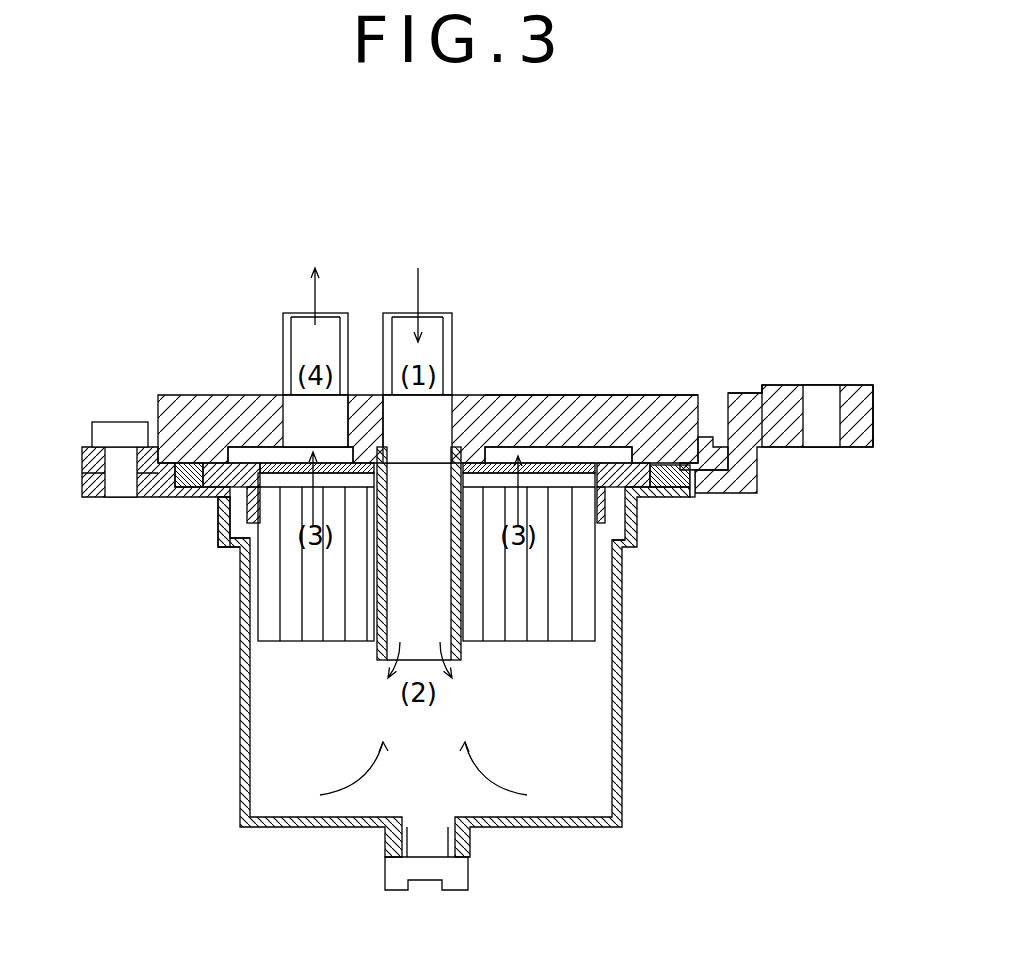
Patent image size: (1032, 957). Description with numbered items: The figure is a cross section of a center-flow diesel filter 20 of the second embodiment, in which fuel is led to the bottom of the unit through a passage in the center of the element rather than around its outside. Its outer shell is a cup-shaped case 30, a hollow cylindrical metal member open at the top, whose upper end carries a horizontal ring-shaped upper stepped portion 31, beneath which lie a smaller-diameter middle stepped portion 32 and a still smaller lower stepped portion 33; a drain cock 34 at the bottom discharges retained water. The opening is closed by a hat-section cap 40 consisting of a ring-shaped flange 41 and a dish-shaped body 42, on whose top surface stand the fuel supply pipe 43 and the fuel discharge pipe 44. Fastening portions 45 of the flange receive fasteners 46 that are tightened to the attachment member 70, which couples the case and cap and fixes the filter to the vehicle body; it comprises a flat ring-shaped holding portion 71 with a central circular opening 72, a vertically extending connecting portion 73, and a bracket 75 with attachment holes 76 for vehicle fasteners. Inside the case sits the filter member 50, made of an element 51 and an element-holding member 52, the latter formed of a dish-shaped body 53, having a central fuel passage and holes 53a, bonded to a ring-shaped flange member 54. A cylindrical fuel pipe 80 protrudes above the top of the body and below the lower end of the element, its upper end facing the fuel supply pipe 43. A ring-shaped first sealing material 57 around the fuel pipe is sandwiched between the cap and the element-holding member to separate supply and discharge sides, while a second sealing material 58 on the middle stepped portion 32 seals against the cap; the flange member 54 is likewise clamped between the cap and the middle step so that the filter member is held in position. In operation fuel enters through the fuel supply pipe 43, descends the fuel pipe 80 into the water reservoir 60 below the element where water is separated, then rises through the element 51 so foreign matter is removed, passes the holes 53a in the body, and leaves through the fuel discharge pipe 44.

The diesel filter 20 is at (815, 378).
The case 30 is at (624, 750).
The upper stepped portion 31 is at (82, 466).
The middle stepped portion 32 is at (197, 497).
The lower stepped portion 33 is at (220, 558).
The drain cock 34 is at (462, 872).
The cap 40 is at (213, 390).
The ring-shaped flange 41 is at (711, 445).
The dish-shaped body 42 is at (599, 396).
The fuel supply pipe 43 is at (446, 312).
The fuel discharge pipe 44 is at (284, 312).
The fastening portion 45 is at (85, 452).
The fastener 46 is at (100, 430).
The filter member 50 is at (600, 586).
The element 51 is at (590, 545).
The element-holding member 52 is at (530, 462).
The body 53 is at (212, 462).
The holes 53a is at (292, 468).
The flange member 54 is at (647, 462).
The first sealing material 57 is at (358, 396).
The second sealing material 58 is at (178, 498).
The water reservoir 60 is at (280, 782).
The attachment member 70 is at (877, 452).
The holding portion 71 is at (85, 492).
The circular opening 72 is at (693, 495).
The connecting portion 73 is at (745, 485).
The bracket 75 is at (781, 392).
The attachment hole 76 is at (832, 412).
The fuel pipe 80 is at (437, 549).